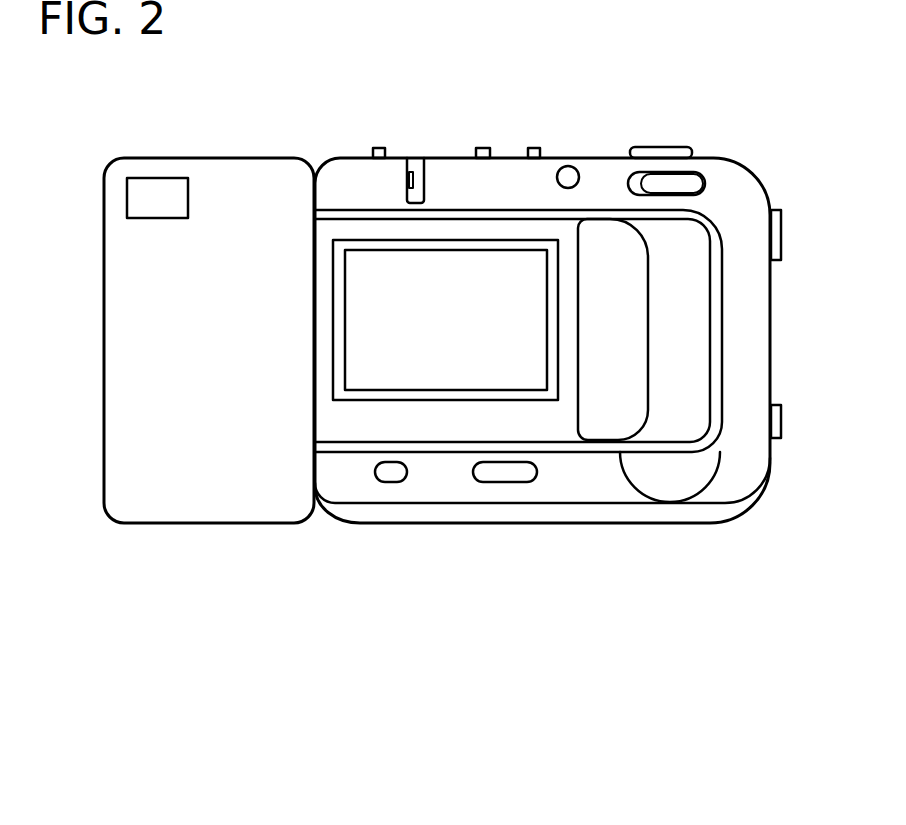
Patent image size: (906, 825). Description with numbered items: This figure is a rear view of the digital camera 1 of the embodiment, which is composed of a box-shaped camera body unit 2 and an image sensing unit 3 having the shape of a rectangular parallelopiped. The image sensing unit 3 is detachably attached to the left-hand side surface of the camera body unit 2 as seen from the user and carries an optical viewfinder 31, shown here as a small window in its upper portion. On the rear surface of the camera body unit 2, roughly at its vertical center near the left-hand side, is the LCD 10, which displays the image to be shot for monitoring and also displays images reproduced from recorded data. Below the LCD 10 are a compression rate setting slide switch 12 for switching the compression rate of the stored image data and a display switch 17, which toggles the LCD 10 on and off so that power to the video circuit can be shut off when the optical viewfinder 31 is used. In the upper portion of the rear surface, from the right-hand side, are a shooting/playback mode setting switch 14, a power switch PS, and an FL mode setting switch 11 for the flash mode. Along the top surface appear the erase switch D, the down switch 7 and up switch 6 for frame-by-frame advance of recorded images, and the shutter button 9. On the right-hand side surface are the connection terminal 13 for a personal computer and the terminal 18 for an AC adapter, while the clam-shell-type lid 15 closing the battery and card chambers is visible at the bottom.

The digital camera 1 is at (396, 72).
The camera body unit 2 is at (607, 157).
The image sensing unit 3 is at (243, 160).
The optical viewfinder 31 is at (160, 178).
The erase switch D is at (378, 148).
The FL mode setting switch 11 is at (418, 158).
The down switch 7 is at (484, 148).
The up switch 6 is at (534, 148).
The power switch PS is at (568, 166).
The shutter button 9 is at (641, 147).
The shooting/playback mode setting switch 14 is at (697, 178).
The connection terminal 13 is at (783, 233).
The terminal 18 is at (783, 421).
The compression rate setting slide switch 12 is at (390, 482).
The LCD 10 is at (453, 372).
The display switch 17 is at (507, 482).
The clam-shell-type lid 15 is at (612, 512).